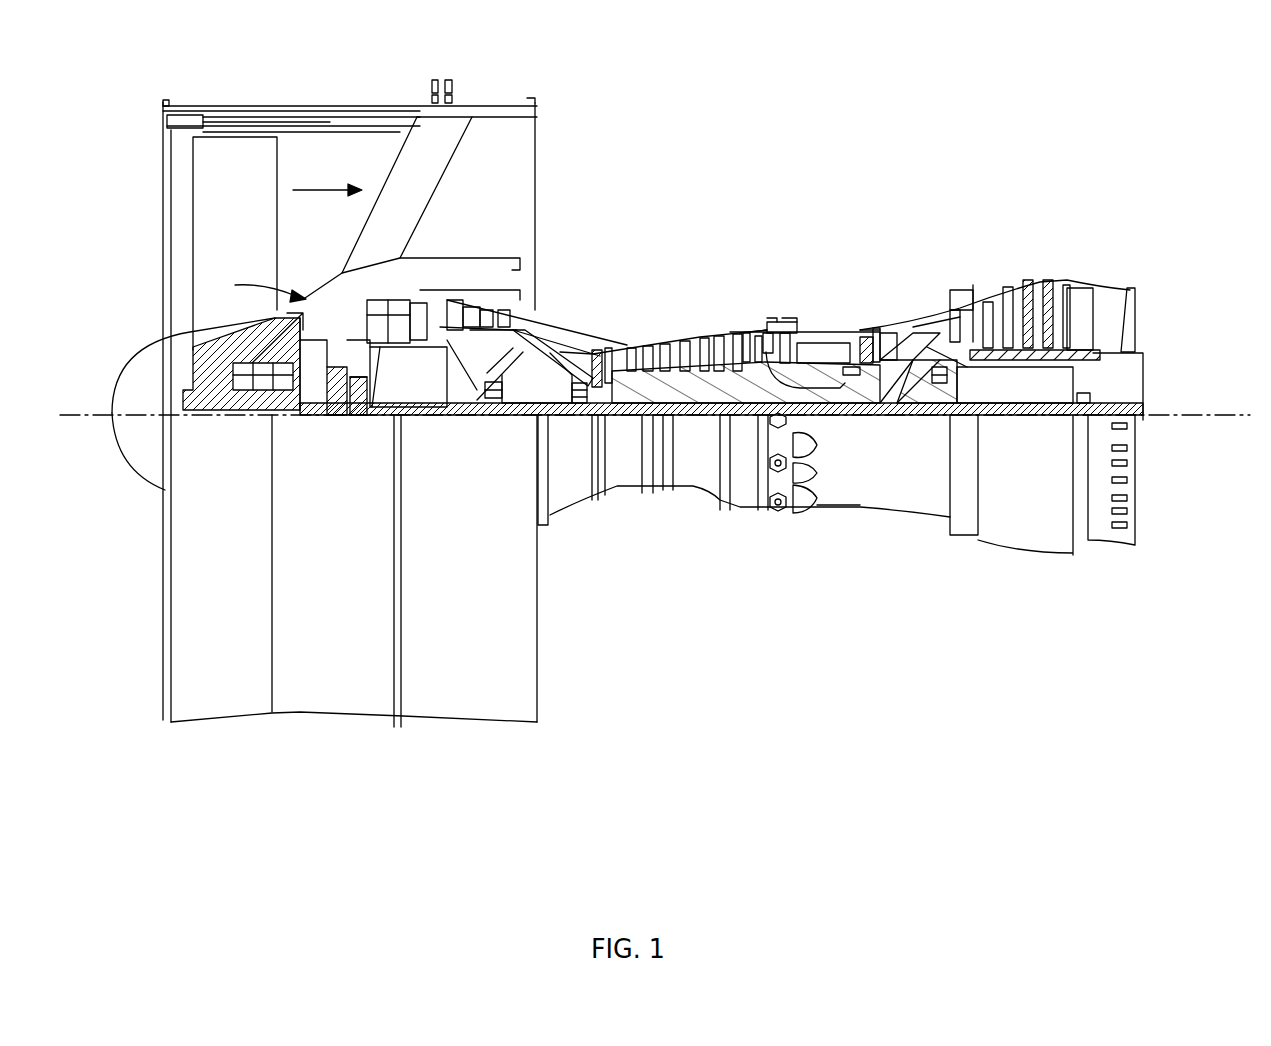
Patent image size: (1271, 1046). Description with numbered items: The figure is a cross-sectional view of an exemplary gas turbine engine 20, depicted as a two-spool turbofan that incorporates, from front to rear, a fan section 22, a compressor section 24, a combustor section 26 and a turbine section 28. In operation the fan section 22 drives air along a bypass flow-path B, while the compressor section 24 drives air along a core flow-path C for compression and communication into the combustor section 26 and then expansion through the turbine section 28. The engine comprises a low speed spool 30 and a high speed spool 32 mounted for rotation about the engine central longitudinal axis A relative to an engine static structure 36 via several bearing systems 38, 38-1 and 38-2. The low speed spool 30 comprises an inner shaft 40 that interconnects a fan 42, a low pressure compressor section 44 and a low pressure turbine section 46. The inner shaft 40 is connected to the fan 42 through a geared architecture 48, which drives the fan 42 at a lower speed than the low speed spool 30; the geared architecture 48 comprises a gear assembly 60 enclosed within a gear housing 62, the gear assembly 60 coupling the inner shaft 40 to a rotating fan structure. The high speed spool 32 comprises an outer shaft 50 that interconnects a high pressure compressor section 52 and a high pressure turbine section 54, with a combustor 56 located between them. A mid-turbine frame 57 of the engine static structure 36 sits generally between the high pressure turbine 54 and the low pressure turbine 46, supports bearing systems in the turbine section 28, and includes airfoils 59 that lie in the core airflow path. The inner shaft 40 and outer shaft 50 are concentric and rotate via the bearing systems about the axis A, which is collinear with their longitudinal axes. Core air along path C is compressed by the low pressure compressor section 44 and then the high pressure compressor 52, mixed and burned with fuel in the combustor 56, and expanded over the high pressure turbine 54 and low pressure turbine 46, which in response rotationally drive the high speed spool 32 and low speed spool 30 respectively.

The gas turbine engine 20 is at (862, 142).
The fan section 22 is at (396, 86).
The compressor section 24 is at (400, 220).
The combustor section 26 is at (765, 220).
The turbine section 28 is at (1076, 220).
The low speed spool 30 is at (704, 420).
The high speed spool 32 is at (742, 385).
The engine static structure 36 is at (151, 744).
The bearing system 38 is at (930, 403).
The bearing system 38-1 is at (253, 392).
The bearing system 38-2 is at (493, 400).
The inner shaft 40 is at (560, 415).
The fan 42 is at (220, 238).
The low pressure compressor section 44 is at (478, 310).
The low pressure turbine section 46 is at (1013, 300).
The geared architecture 48 is at (362, 422).
The outer shaft 50 is at (812, 395).
The high pressure compressor section 52 is at (683, 383).
The high pressure turbine section 54 is at (886, 330).
The combustor 56 is at (812, 353).
The mid-turbine frame 57 is at (932, 337).
The airfoils 59 is at (932, 340).
The gear assembly 60 is at (357, 387).
The gear housing 62 is at (365, 372).
The engine central longitudinal axis A is at (85, 408).
The bypass flow-path B is at (322, 192).
The core flow-path C is at (260, 285).